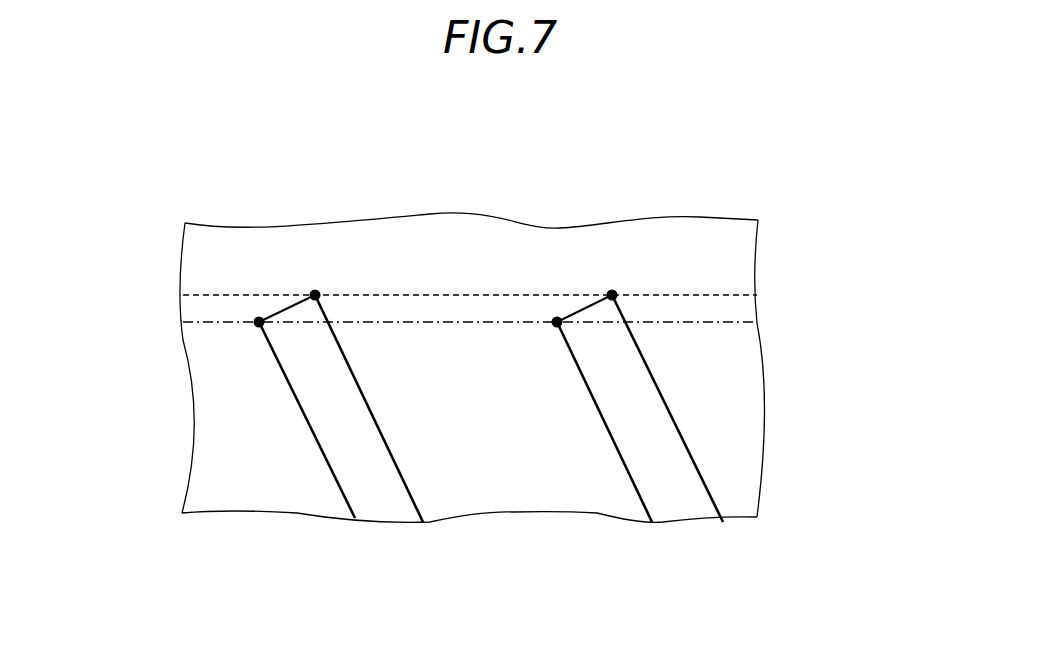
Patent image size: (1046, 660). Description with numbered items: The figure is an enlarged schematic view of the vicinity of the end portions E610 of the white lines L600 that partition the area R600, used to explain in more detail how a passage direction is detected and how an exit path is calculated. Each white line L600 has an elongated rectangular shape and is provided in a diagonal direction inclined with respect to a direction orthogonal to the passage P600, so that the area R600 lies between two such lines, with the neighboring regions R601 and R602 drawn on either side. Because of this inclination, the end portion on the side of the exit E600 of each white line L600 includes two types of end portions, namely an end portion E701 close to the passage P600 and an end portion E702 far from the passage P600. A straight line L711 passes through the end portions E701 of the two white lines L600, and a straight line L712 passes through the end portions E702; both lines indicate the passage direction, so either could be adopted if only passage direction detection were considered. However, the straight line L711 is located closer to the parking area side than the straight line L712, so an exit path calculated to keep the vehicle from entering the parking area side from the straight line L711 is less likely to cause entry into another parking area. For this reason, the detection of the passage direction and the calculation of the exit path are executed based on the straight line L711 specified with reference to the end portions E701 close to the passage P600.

The passage P600 is at (732, 245).
The straight line L711 is at (693, 294).
The straight line L712 is at (713, 323).
The white line L600 is at (340, 493).
The exit E600 is at (452, 308).
The end portion E610 is at (425, 223).
The end portion E701 is at (315, 295).
The end portion E702 is at (259, 322).
The first region R601 is at (228, 485).
The area R600 is at (525, 485).
The second region R602 is at (748, 485).